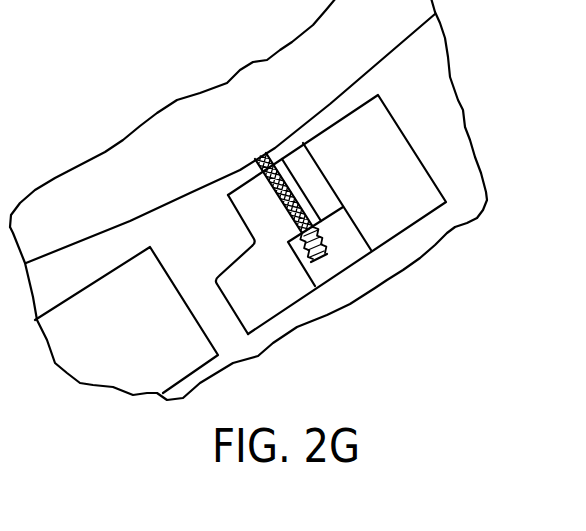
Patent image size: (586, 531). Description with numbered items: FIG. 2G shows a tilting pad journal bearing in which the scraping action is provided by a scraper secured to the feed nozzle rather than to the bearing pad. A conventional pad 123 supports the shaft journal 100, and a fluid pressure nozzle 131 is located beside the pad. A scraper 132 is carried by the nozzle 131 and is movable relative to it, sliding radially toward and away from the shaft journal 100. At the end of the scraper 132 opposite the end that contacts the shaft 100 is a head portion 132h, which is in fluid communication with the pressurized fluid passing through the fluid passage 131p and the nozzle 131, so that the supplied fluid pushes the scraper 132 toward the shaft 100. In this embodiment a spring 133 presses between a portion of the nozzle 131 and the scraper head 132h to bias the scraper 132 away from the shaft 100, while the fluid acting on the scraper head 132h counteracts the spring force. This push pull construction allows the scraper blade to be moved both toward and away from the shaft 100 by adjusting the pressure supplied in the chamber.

The shaft journal 100 is at (337, 89).
The conventional pad 123 is at (140, 330).
The fluid pressure nozzle 131 is at (410, 176).
The fluid passage 131p is at (306, 175).
The scraper 132 is at (252, 163).
The head portion 132h is at (327, 256).
The spring 133 is at (344, 261).